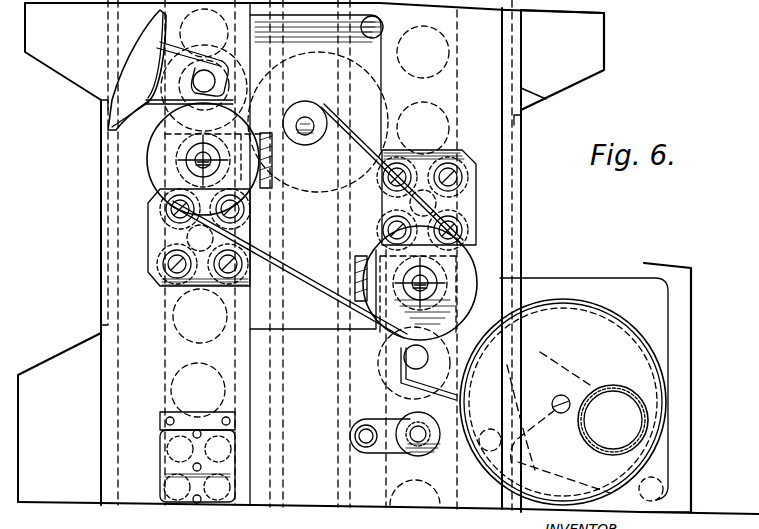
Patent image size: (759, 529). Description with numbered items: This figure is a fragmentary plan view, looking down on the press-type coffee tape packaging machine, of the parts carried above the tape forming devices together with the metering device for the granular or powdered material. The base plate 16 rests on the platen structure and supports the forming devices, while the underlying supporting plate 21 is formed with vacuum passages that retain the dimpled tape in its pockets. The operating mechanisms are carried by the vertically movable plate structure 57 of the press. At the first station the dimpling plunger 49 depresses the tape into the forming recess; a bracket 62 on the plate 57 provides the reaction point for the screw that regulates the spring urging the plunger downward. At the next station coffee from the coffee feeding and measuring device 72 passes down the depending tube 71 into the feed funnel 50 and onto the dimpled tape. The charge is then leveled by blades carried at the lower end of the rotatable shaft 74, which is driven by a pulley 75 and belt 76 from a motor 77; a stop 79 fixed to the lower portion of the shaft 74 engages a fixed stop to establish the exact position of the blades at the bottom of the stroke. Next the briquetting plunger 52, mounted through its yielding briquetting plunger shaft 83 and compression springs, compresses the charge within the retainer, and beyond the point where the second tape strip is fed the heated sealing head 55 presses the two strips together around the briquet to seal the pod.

The base plate 16 is at (604, 49).
The supporting plate 21 is at (118, 209).
The dimpling plunger 49 is at (405, 456).
The feed funnel 50 is at (251, 60).
The briquetting plunger 52 is at (142, 258).
The sealing head 55 is at (153, 464).
The vertically movable plate structure 57 is at (546, 99).
The bracket 62 is at (390, 454).
The tube 71 is at (200, 80).
The coffee feeding and measuring device 72 is at (108, 113).
The rotatable shaft 74 is at (198, 159).
The pulley 75 is at (150, 165).
The belt 76 is at (288, 266).
The motor 77 is at (328, 50).
The stop 79 is at (272, 162).
The briquetting plunger shaft 83 is at (200, 237).